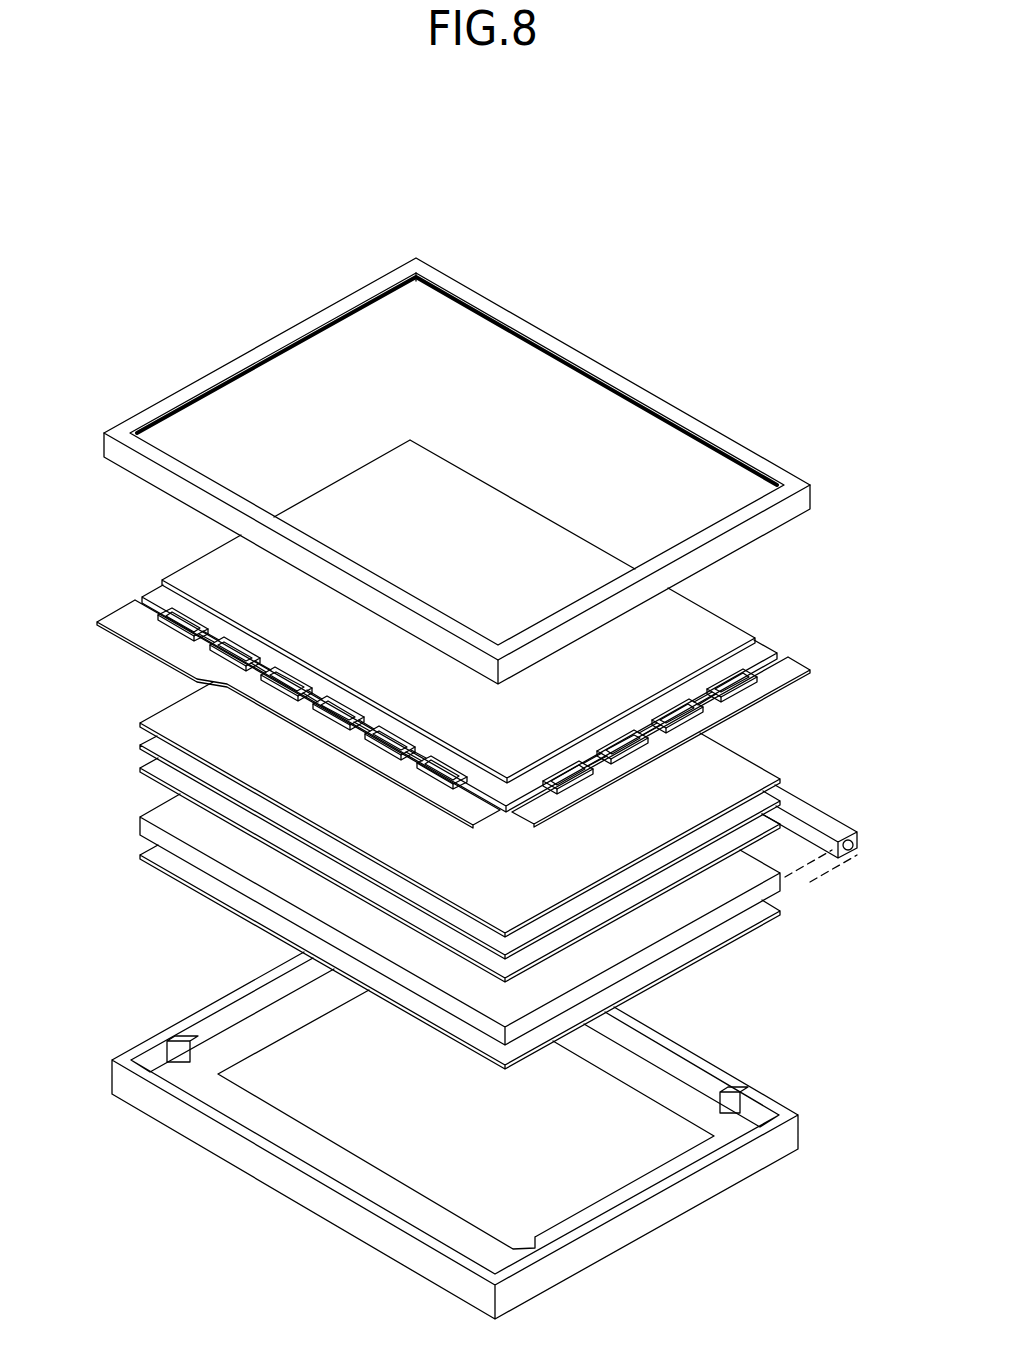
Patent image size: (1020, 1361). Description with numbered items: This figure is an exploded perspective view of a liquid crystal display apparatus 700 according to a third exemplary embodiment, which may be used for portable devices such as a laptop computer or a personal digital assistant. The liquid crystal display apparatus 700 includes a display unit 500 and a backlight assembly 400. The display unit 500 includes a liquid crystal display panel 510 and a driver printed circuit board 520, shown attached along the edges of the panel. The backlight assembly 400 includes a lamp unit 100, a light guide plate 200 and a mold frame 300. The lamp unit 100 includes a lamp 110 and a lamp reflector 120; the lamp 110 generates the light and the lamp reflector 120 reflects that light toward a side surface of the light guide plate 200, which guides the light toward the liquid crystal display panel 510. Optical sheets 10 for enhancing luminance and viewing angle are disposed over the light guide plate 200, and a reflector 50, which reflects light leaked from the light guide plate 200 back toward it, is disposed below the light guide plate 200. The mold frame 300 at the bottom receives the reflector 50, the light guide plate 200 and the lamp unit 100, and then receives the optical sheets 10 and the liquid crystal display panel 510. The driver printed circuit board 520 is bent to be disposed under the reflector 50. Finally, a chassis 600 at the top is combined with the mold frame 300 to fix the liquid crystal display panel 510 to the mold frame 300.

The liquid crystal display apparatus 700 is at (446, 227).
The chassis 600 is at (233, 367).
The display unit 500 is at (451, 634).
The liquid crystal display panel 510 is at (195, 578).
The driver printed circuit board 520 is at (118, 615).
The backlight assembly 400 is at (434, 886).
The optical sheets 10 is at (131, 720).
The light guide plate 200 is at (730, 916).
The reflector 50 is at (438, 931).
The lamp unit 100 is at (842, 783).
The lamp 110 is at (829, 796).
The lamp reflector 120 is at (833, 817).
The mold frame 300 is at (815, 1126).